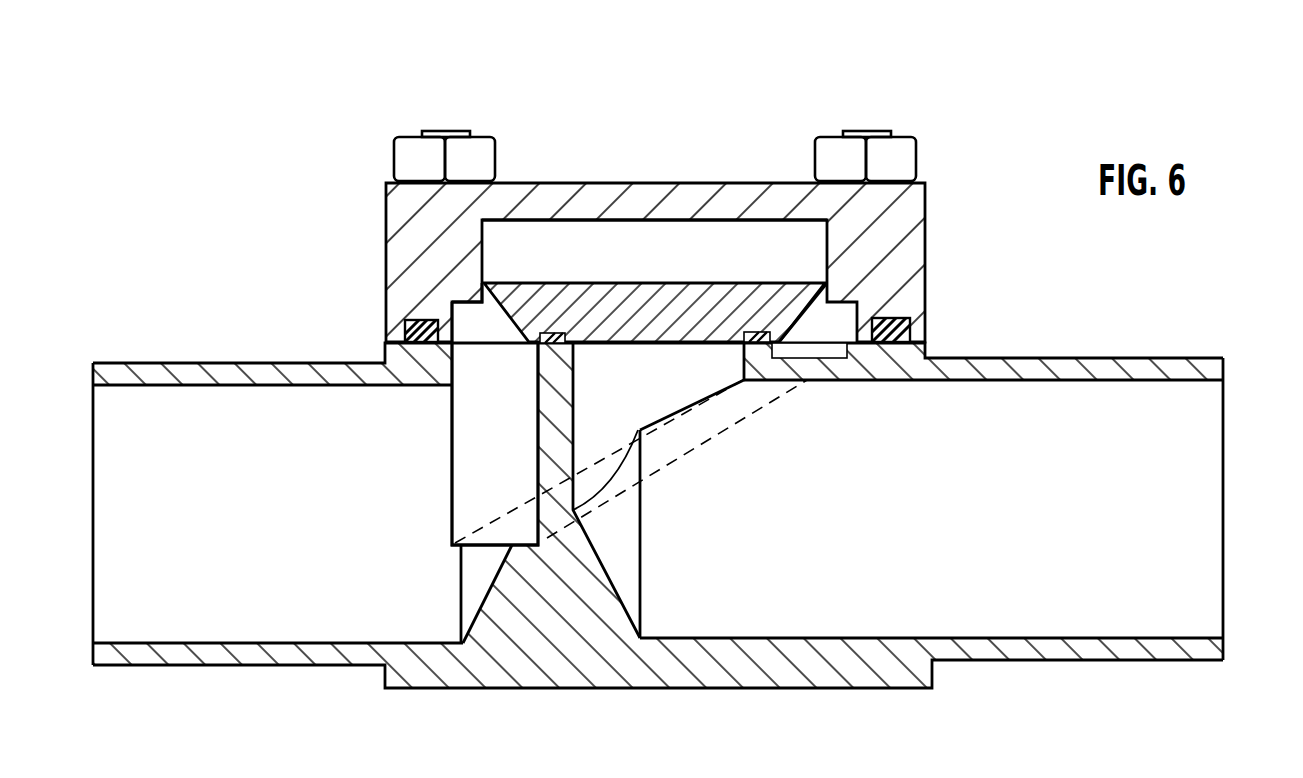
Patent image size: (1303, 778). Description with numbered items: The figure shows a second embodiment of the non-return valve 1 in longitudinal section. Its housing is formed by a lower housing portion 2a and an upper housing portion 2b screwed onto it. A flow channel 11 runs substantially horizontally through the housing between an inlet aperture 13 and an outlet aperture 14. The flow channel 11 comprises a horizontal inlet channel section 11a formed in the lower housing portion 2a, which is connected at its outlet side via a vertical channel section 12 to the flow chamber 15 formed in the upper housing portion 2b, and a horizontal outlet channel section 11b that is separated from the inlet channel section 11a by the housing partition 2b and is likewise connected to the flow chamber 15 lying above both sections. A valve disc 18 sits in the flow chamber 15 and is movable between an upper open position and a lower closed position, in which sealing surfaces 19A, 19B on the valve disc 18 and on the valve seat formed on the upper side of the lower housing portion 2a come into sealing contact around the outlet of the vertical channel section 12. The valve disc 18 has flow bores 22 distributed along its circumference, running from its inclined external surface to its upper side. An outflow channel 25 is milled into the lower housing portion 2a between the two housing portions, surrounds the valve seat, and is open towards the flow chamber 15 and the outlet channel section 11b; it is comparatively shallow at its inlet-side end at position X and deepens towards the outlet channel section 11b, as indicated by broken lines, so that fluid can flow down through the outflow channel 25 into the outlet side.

The non-return valve 1 is at (927, 117).
The lower housing portion 2a is at (568, 658).
The upper housing portion 2b is at (722, 193).
The flow channel 11 is at (808, 588).
The inlet channel section 11a is at (1085, 603).
The outlet channel section 11b is at (218, 607).
The vertical channel section 12 is at (741, 352).
The inlet aperture 13 is at (1208, 560).
The outlet aperture 14 is at (120, 430).
The flow chamber 15 is at (667, 237).
The valve disc 18 is at (613, 302).
The sealing surface 19A is at (563, 353).
The sealing surface 19B is at (495, 444).
The flow bores 22 is at (517, 293).
The outflow channel 25 is at (527, 523).
The position X is at (830, 340).